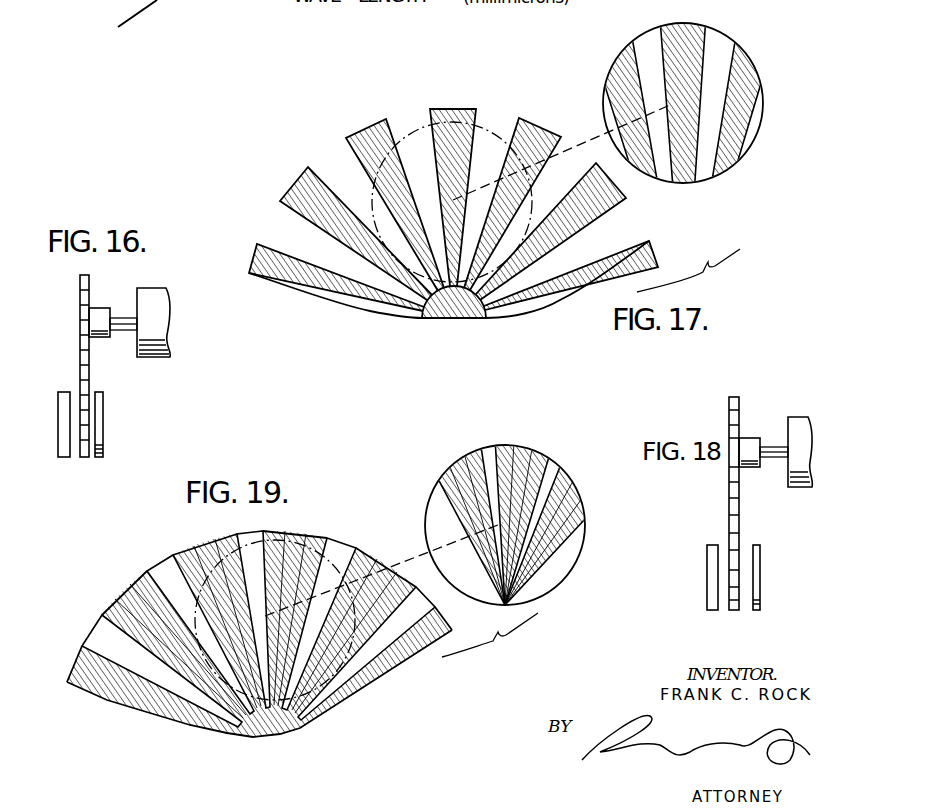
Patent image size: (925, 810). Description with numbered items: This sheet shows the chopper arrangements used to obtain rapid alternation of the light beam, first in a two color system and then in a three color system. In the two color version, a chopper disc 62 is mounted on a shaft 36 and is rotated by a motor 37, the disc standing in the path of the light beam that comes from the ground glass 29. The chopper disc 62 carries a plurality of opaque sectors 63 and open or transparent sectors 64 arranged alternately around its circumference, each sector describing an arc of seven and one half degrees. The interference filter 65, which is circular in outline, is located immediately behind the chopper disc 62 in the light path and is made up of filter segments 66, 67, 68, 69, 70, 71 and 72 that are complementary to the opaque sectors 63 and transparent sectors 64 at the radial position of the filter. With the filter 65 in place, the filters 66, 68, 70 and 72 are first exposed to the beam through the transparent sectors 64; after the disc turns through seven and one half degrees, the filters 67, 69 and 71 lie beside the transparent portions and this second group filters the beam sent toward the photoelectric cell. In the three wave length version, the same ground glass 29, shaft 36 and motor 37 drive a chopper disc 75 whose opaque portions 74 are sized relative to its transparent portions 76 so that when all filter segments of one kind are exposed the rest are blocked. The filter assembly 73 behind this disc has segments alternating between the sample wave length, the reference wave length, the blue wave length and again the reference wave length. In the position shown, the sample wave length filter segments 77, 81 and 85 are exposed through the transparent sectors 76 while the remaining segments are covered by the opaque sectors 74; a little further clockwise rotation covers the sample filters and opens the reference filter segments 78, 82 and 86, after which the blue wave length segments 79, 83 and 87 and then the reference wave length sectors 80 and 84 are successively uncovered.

In FIG. 16, the ground glass 29 is at (58, 427).
In FIG. 18, the ground glass 29 is at (712, 610).
In FIG. 16, the shaft 36 is at (122, 331).
In FIG. 18, the shaft 36 is at (773, 447).
In FIG. 16, the motor 37 is at (170, 357).
In FIG. 18, the motor 37 is at (803, 420).
In FIG. 16, the chopper disc 62 is at (84, 462).
In FIG. 17, the chopper disc 62 is at (342, 302).
In FIG. 17, the opaque sectors 63 is at (347, 143).
In FIG. 17, the transparent sectors 64 is at (410, 131).
In FIG. 16, the interference filter 65 is at (104, 448).
In FIG. 17, the interference filter 65 is at (695, 122).
In FIG. 17, the filter segment 66 is at (607, 108).
In FIG. 17, the filter segment 67 is at (615, 73).
In FIG. 17, the filter segment 68 is at (643, 44).
In FIG. 17, the filter segment 69 is at (690, 32).
In FIG. 17, the filter segment 70 is at (717, 50).
In FIG. 17, the filter segment 71 is at (758, 82).
In FIG. 17, the filter segment 72 is at (757, 117).
In FIG. 19, the filter assembly 73 is at (510, 503).
In FIG. 18, the filter assembly 73 is at (757, 610).
In FIG. 19, the opaque portions 74 is at (210, 545).
In FIG. 19, the chopper disc 75 is at (302, 640).
In FIG. 18, the chopper disc 75 is at (735, 614).
In FIG. 19, the transparent portions 76 is at (258, 517).
In FIG. 19, the sample wave length filter segment 77 is at (428, 533).
In FIG. 19, the reference filter segment 78 is at (430, 498).
In FIG. 19, the blue wave length segment 79 is at (447, 472).
In FIG. 19, the reference wave length sector 80 is at (462, 455).
In FIG. 19, the sample wave length filter segment 81 is at (485, 455).
In FIG. 19, the reference filter segment 82 is at (505, 452).
In FIG. 19, the blue wave length segment 83 is at (527, 455).
In FIG. 19, the reference wave length sector 84 is at (558, 468).
In FIG. 19, the sample wave length filter segment 85 is at (572, 480).
In FIG. 19, the reference filter segment 86 is at (570, 500).
In FIG. 19, the blue wave length segment 87 is at (583, 528).